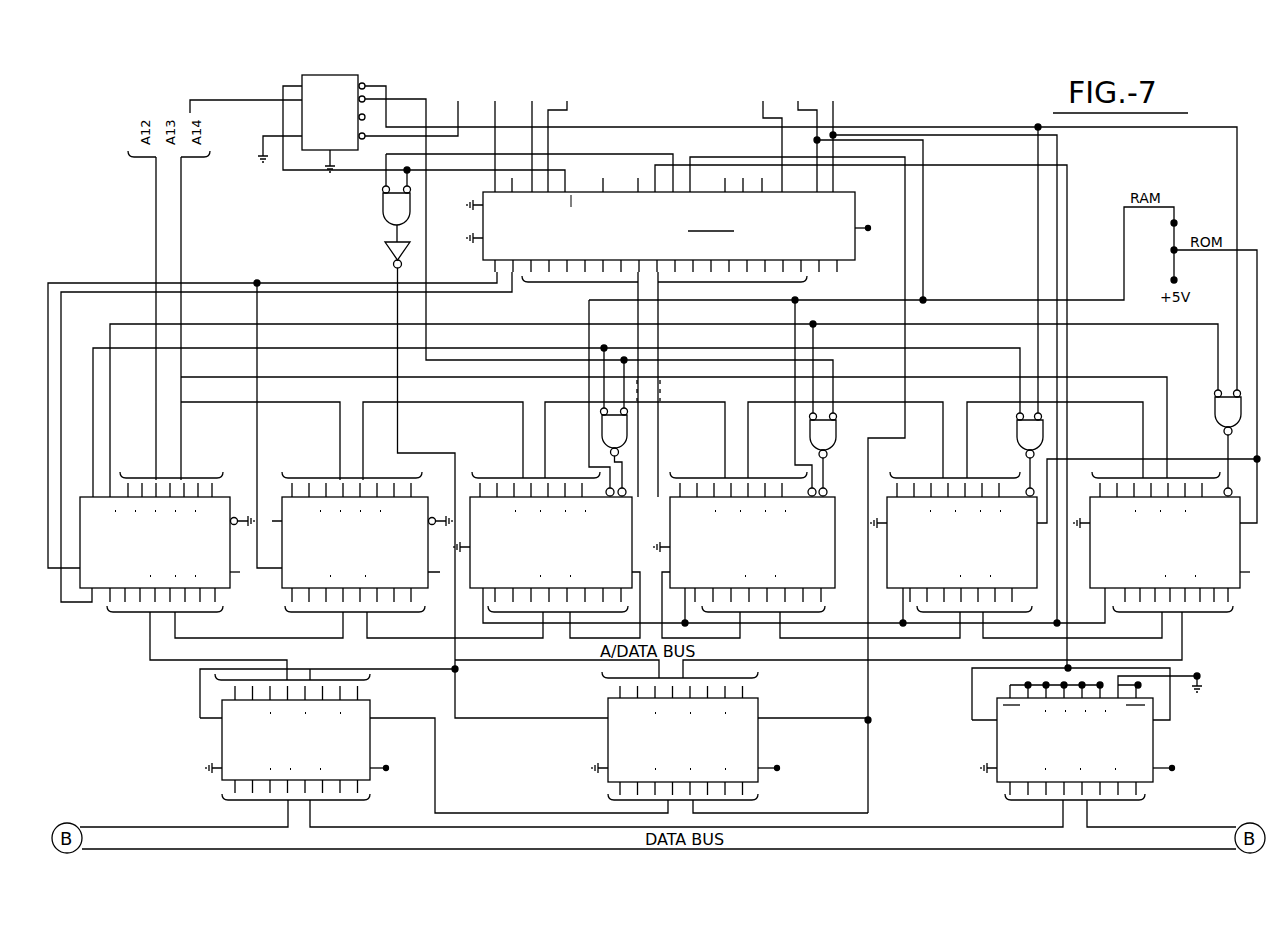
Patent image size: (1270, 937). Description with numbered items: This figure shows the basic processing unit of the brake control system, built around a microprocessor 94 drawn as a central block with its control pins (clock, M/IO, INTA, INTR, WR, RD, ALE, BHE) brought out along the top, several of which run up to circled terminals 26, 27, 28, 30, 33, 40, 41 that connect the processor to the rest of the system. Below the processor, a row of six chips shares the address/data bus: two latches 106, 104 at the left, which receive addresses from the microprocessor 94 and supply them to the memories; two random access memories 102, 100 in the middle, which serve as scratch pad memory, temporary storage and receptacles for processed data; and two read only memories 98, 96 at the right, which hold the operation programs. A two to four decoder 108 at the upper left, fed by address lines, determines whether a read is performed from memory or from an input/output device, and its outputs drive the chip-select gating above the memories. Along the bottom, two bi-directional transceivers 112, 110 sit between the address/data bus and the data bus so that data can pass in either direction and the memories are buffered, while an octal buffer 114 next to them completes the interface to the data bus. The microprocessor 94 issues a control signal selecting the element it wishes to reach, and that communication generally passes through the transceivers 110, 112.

The microprocessor 94 is at (858, 195).
The read only memory 96 is at (1200, 600).
The read only memory 98 is at (928, 495).
The random access memory 100 is at (708, 497).
The random access memory 102 is at (508, 495).
The latch 104 is at (318, 497).
The latch 106 is at (192, 497).
The two to four decoder 108 is at (306, 150).
The transceiver 110 is at (608, 742).
The transceiver 112 is at (222, 738).
The octal buffer 114 is at (997, 740).
The connector terminal 26 is at (565, 130).
The connector terminal 27 is at (532, 130).
The connector terminal 28 is at (495, 130).
The connector terminal 30 is at (764, 130).
The connector terminal 33 is at (419, 102).
The connector terminal 40 is at (833, 130).
The connector terminal 41 is at (799, 130).